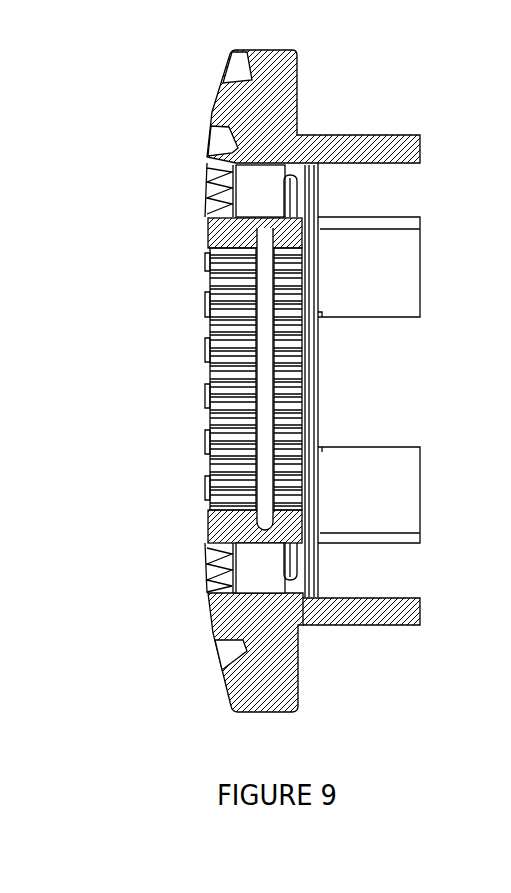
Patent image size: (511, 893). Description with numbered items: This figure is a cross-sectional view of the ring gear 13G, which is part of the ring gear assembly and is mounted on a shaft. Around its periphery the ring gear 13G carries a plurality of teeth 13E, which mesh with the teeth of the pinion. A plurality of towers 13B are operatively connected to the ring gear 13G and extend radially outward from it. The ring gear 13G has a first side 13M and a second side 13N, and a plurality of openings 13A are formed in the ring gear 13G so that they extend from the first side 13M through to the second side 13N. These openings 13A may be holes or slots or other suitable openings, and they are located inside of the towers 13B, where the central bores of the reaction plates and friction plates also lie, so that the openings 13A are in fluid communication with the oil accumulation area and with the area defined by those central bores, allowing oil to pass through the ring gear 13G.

The teeth 13E is at (215, 103).
The ring gear 13G is at (208, 373).
The first side 13M is at (232, 568).
The second side 13N is at (297, 558).
The openings 13A is at (258, 570).
The towers 13B is at (358, 625).